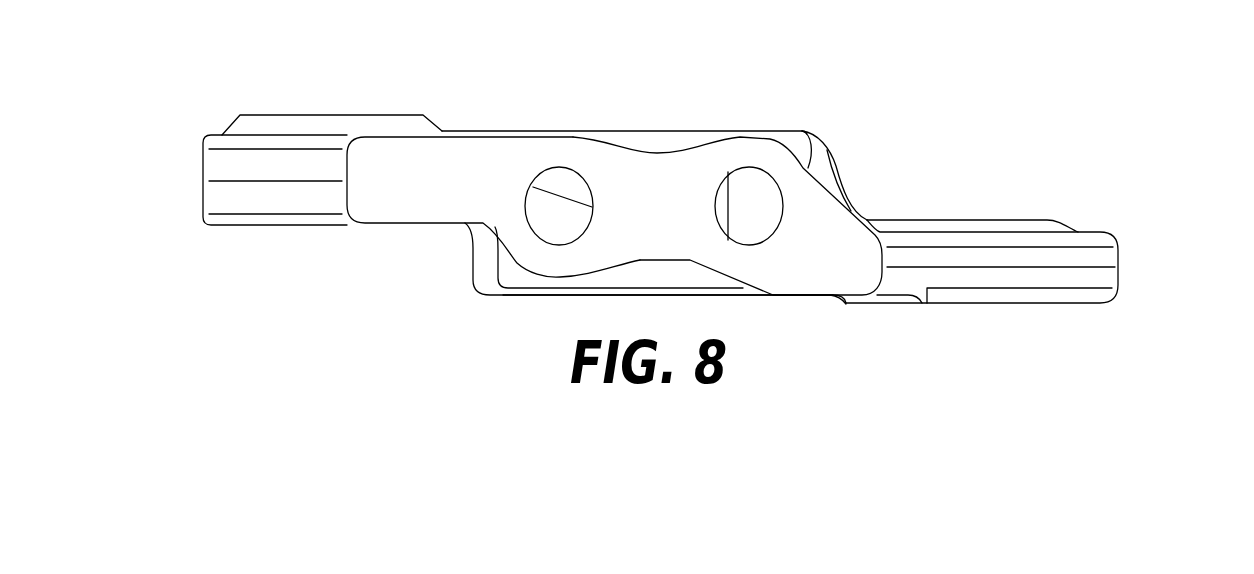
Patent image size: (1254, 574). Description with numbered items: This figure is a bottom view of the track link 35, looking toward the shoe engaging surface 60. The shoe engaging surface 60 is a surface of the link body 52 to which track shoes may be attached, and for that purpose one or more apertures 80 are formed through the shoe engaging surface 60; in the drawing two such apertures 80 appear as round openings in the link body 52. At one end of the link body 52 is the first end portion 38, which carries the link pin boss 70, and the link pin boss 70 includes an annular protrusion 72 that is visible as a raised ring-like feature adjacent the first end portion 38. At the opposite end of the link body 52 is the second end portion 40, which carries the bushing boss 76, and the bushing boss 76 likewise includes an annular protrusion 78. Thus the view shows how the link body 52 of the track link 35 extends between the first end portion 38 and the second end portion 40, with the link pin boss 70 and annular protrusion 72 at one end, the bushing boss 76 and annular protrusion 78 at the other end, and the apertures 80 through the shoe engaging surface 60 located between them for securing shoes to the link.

The track link 35 is at (540, 349).
The first end portion 38 is at (181, 192).
The second end portion 40 is at (1137, 265).
The link body 52 is at (809, 262).
The shoe engaging surface 60 is at (400, 212).
The link pin boss 70 is at (310, 116).
The annular protrusion 72 is at (423, 115).
The bushing boss 76 is at (903, 305).
The annular protrusion 78 is at (842, 305).
The apertures 80 is at (594, 205).